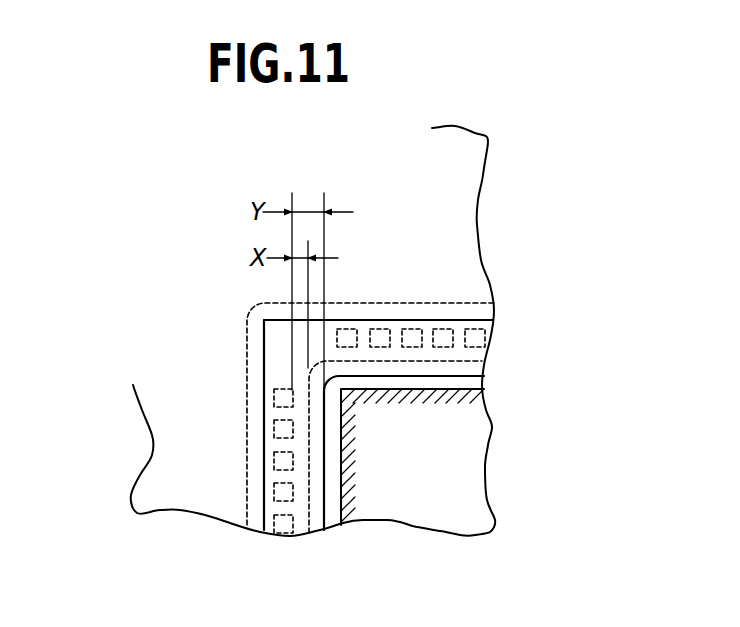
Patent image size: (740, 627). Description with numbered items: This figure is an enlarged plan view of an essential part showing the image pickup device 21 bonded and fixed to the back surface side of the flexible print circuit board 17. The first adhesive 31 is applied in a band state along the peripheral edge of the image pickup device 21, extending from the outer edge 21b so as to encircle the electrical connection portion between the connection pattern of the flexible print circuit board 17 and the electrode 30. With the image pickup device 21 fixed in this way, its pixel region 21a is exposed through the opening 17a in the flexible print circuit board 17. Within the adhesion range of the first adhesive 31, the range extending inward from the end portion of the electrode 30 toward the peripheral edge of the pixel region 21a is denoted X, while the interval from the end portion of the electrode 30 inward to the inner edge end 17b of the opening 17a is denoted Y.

The flexible print circuit board 17 is at (456, 203).
The opening 17a is at (487, 381).
The inner edge end 17b is at (454, 380).
The image pickup device 21 is at (398, 326).
The pixel region 21a is at (437, 475).
The outer edge 21b is at (262, 372).
The electrode 30 is at (448, 335).
The first adhesive 31 is at (453, 310).